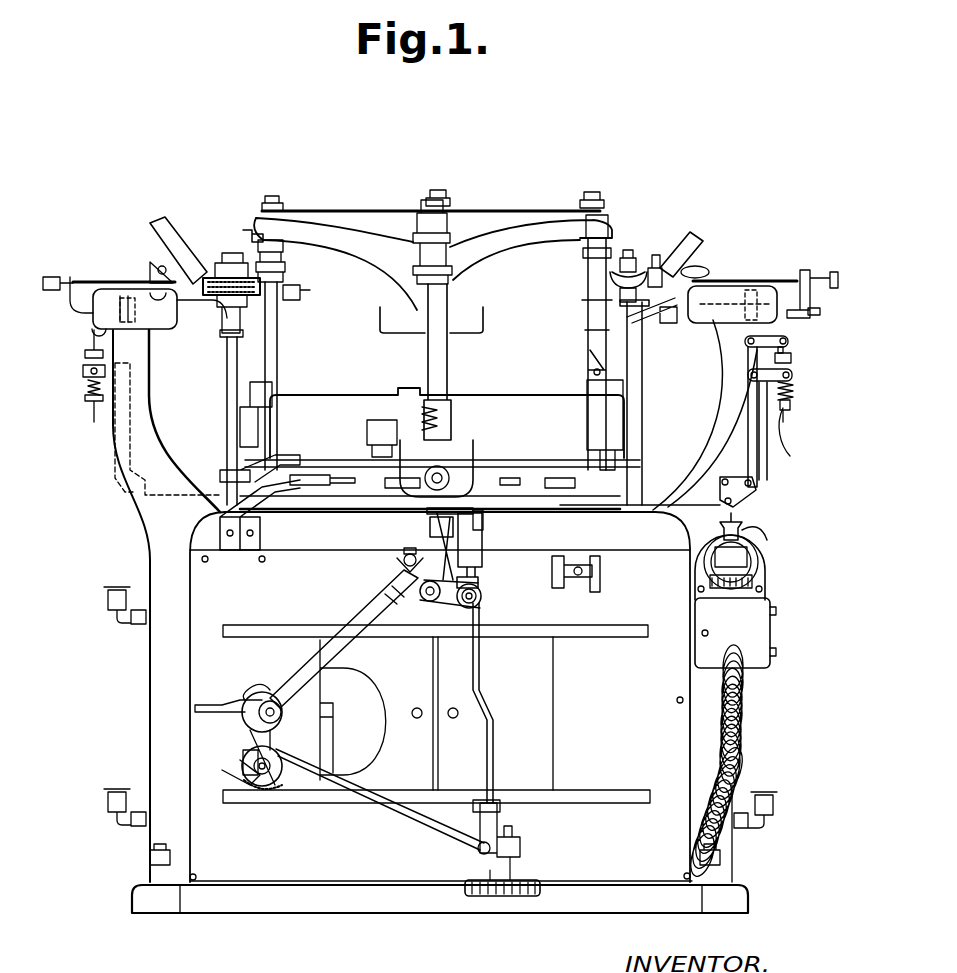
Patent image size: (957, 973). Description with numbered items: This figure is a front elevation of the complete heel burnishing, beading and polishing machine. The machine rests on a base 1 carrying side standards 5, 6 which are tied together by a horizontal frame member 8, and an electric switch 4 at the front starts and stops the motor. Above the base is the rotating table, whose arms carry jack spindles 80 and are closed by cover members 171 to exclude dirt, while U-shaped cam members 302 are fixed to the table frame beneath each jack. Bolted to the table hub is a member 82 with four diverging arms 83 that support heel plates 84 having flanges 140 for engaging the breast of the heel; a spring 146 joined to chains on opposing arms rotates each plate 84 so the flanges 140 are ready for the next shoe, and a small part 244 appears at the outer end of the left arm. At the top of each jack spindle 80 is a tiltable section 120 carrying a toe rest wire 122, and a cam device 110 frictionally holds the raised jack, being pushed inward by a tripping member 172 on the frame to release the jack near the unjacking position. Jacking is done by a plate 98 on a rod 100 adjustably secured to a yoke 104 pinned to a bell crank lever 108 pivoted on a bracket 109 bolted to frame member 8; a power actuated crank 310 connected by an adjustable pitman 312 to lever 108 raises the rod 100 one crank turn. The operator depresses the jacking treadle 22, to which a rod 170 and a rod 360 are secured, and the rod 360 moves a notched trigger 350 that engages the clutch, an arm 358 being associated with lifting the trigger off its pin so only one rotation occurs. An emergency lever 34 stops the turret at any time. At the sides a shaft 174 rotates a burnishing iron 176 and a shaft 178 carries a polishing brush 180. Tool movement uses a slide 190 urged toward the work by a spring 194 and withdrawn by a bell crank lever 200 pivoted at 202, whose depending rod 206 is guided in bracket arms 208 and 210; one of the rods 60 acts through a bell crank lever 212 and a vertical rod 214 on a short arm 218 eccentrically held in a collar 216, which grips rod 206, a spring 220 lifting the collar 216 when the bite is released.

The base 1 is at (356, 905).
The electric switch 4 is at (758, 567).
The standard 5 is at (714, 718).
The standard 6 is at (150, 697).
The horizontal frame member 8 is at (743, 532).
The jacking treadle 22 is at (492, 894).
The emergency lever 34 is at (594, 580).
The rods 60 is at (648, 507).
The jack spindle 80 is at (588, 370).
The member 82 is at (447, 307).
The diverging arms 83 is at (338, 241).
The heel plate 84 is at (440, 261).
The plate 98 is at (427, 514).
The rod 100 is at (482, 568).
The yoke 104 is at (482, 594).
The bell crank lever 108 is at (447, 583).
The bracket 109 is at (404, 562).
The cam device 110 is at (227, 477).
The section 120 is at (300, 300).
The toe rest wire 122 is at (393, 334).
The flanges 140 is at (413, 284).
The spring 146 is at (365, 211).
The rod 170 is at (478, 694).
The cover members 171 is at (506, 396).
The tripping member 172 is at (288, 505).
The shaft 174 is at (641, 377).
The burnishing iron 176 is at (614, 272).
The shaft 178 is at (226, 378).
The polishing brush 180 is at (206, 278).
The slide 190 is at (189, 333).
The spring 194 is at (728, 286).
The bell crank lever 200 is at (752, 350).
The pivot 202 is at (747, 341).
The depending rod 206 is at (793, 368).
The bracket arm 208 is at (791, 358).
The lower bracket arm 210 is at (790, 456).
The bell crank lever 212 is at (757, 495).
The vertical rod 214 is at (745, 440).
The collar 216 is at (794, 383).
The short arm 218 is at (745, 384).
The spring 220 is at (792, 401).
The clip 244 is at (246, 230).
The U-shaped cam members 302 is at (483, 520).
The power actuated crank 310 is at (253, 733).
The adjustable pitman 312 is at (312, 675).
The notched trigger 350 is at (283, 716).
The arm 358 is at (247, 778).
The rod 360 is at (407, 811).